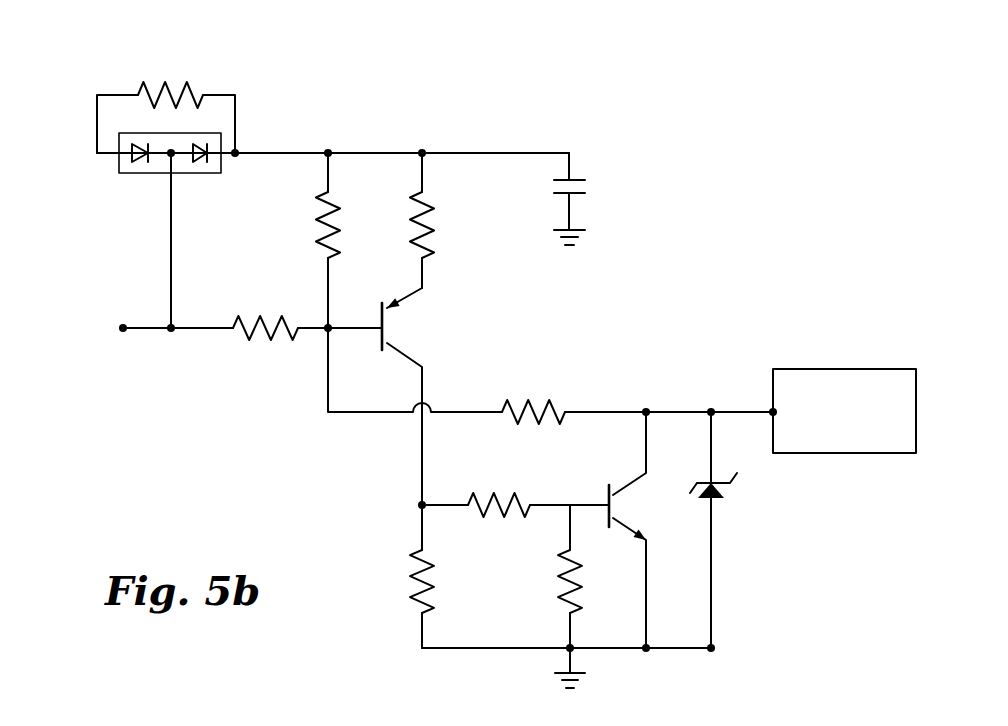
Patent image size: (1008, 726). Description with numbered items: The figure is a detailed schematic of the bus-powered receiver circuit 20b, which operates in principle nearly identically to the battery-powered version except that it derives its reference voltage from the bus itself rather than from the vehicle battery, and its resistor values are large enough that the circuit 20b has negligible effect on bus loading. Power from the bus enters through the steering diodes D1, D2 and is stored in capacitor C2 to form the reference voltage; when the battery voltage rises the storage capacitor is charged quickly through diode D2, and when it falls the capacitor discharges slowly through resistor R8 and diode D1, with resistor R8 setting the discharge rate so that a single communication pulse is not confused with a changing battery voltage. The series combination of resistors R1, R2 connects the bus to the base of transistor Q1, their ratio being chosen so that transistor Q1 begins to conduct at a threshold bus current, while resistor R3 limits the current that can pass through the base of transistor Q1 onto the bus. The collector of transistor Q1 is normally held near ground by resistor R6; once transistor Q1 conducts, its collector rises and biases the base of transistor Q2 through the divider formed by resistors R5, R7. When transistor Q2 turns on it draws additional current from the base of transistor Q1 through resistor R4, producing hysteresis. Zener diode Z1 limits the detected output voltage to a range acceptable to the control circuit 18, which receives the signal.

The control circuit 18 is at (820, 369).
The bus-powered receiver circuit 20b is at (612, 152).
The resistor R1 is at (265, 312).
The resistor R2 is at (309, 240).
The resistor R3 is at (441, 220).
The resistor R4 is at (533, 397).
The resistor R5 is at (499, 488).
The resistor R6 is at (403, 576).
The resistor R7 is at (551, 576).
The resistor R8 is at (166, 102).
The steering diode D1 is at (140, 172).
The steering diode D2 is at (202, 172).
The capacitor C2 is at (550, 199).
The transistor Q1 is at (412, 396).
The transistor Q2 is at (638, 530).
The zener diode Z1 is at (732, 530).